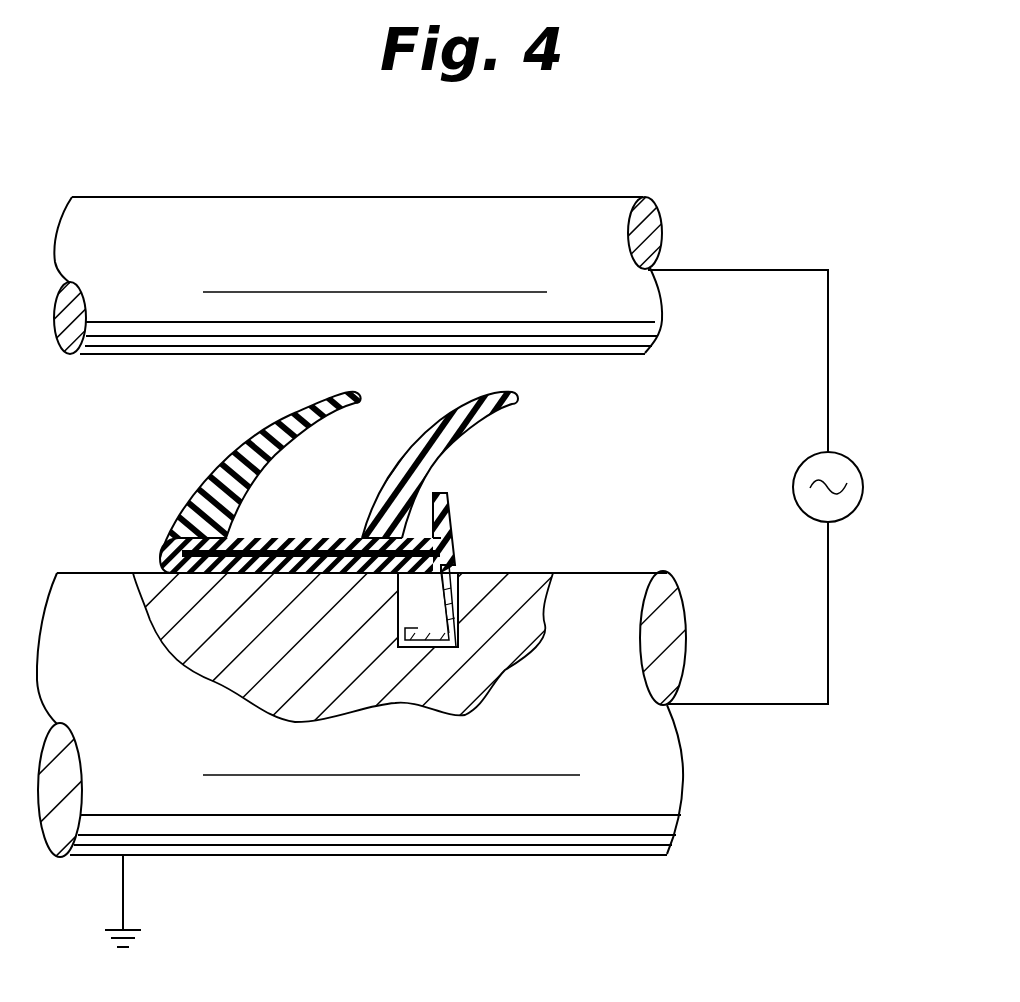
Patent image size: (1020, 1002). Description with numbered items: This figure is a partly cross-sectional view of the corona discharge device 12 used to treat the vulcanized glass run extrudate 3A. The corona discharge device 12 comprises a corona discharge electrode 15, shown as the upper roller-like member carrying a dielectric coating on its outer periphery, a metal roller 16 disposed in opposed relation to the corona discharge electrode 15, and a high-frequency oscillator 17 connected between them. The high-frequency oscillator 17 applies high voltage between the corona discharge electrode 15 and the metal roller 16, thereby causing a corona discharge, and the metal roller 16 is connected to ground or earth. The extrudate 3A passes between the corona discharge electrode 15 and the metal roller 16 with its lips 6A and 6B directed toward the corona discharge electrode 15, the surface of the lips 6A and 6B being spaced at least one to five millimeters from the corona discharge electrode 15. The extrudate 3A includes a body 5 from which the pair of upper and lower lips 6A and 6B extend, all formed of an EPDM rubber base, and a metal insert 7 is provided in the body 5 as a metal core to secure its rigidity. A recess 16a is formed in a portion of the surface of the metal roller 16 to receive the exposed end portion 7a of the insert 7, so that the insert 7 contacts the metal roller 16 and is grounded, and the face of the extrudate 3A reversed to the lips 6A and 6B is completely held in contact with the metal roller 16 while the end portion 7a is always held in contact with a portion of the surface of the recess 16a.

The corona discharge device 12 is at (786, 226).
The corona discharge electrode 15 is at (538, 197).
The metal roller 16 is at (545, 857).
The recess 16a is at (458, 582).
The high-frequency oscillator 17 is at (858, 462).
The vulcanized extrudate 3A is at (336, 502).
The body 5 is at (264, 537).
The upper lip 6A is at (455, 434).
The lower lip 6B is at (236, 455).
The metal insert 7 is at (336, 550).
The end portion of the insert 7a is at (456, 605).